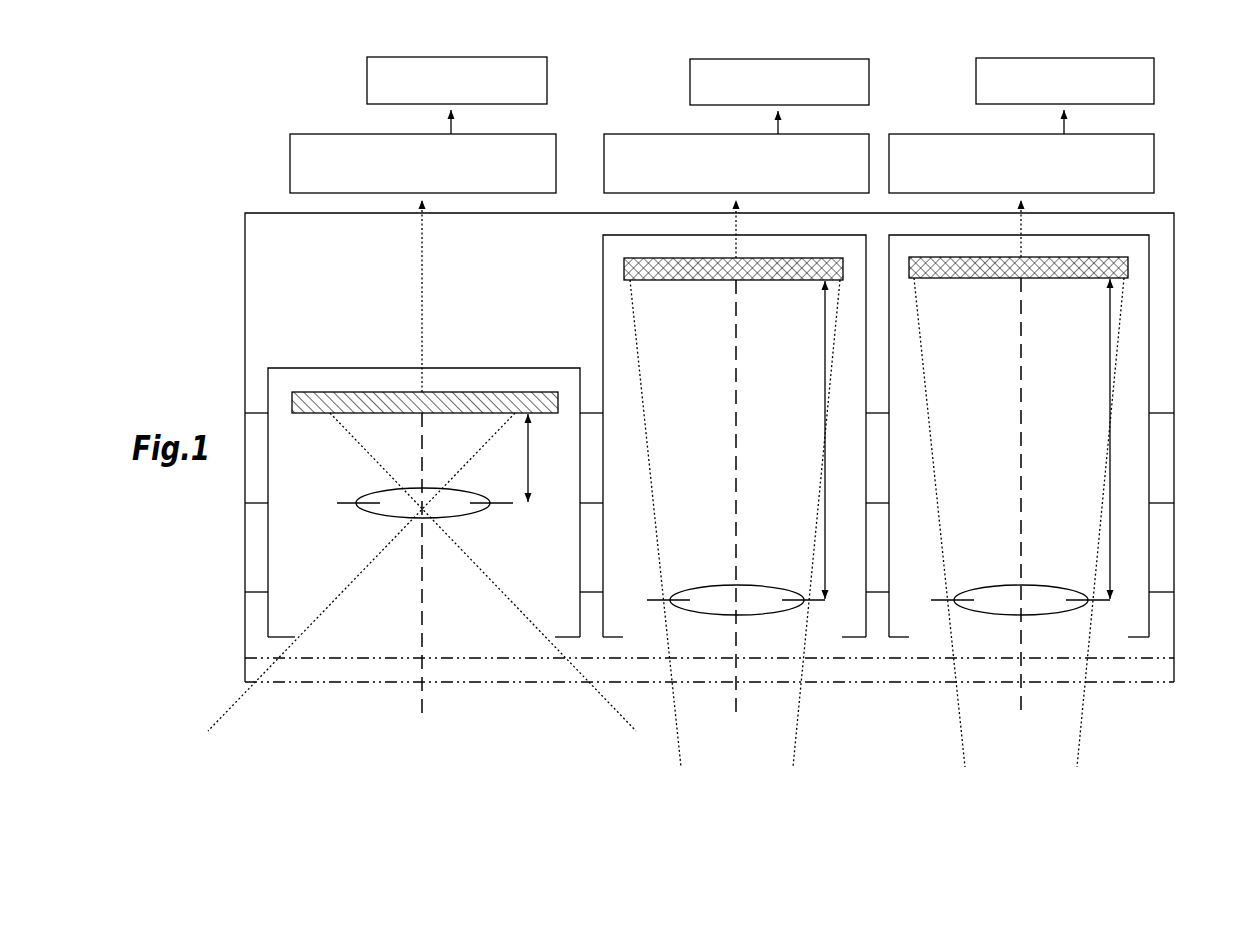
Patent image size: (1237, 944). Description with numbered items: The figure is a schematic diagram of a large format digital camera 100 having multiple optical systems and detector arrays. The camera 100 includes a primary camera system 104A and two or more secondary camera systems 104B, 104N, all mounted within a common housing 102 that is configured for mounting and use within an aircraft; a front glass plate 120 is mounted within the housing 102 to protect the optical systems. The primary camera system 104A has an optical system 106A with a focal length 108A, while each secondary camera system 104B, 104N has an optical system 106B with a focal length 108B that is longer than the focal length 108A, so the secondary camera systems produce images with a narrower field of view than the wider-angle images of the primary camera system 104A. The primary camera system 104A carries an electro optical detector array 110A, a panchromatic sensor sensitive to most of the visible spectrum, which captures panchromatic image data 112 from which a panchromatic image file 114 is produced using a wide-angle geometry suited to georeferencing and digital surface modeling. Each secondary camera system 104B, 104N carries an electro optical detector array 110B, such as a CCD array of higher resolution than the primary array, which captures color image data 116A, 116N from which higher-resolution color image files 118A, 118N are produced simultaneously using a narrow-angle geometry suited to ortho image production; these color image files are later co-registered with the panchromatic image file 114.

The large format digital camera 100 is at (1183, 258).
The housing 102 is at (245, 333).
The primary camera system 104A is at (468, 364).
The secondary camera system 104B is at (598, 306).
The secondary camera system 104N is at (1153, 355).
The optical system 106A is at (349, 516).
The optical system 106B is at (676, 586).
The focal length 108A is at (527, 458).
The focal length 108B is at (830, 440).
The electro optical detector array 110A is at (308, 396).
The electro optical detector array 110B is at (690, 272).
The panchromatic image data 112 is at (304, 150).
The panchromatic image file 114 is at (367, 66).
The color image data 116A is at (613, 145).
The color image data 116N is at (899, 144).
The color image file 118A is at (690, 65).
The color image file 118N is at (976, 64).
The front glass plate 120 is at (275, 688).